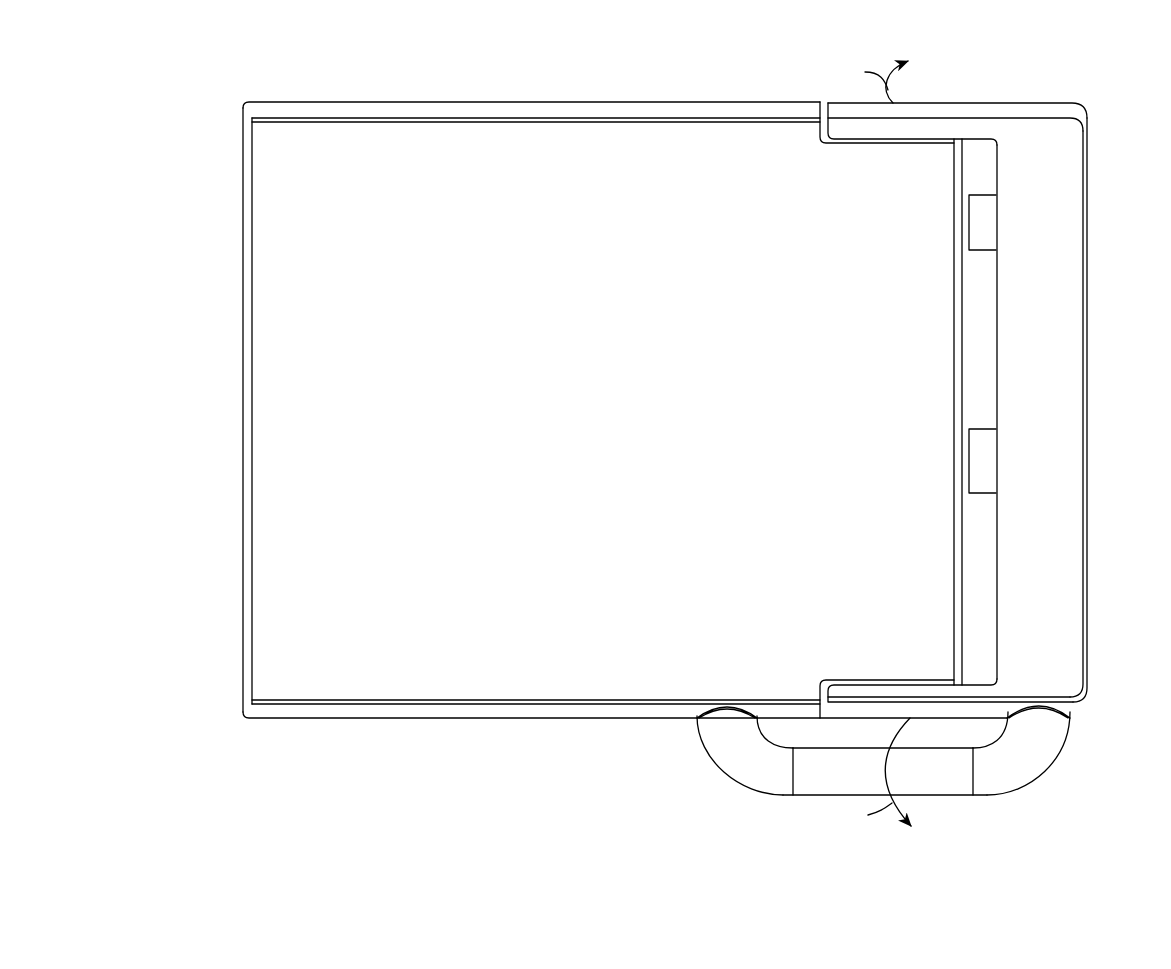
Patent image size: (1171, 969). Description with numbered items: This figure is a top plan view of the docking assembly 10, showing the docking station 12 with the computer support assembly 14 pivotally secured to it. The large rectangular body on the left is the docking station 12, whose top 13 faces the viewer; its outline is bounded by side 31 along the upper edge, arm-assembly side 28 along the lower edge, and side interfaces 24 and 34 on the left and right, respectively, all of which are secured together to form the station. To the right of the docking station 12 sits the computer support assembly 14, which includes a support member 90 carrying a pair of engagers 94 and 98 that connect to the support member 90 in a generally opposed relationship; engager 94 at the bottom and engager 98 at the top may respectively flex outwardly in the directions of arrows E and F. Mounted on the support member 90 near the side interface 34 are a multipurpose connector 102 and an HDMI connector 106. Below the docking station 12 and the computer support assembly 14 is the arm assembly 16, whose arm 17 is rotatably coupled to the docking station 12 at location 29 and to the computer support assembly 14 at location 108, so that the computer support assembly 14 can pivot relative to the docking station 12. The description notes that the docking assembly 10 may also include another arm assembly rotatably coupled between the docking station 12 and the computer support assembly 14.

The docking assembly 10 is at (224, 86).
The docking station 12 is at (351, 98).
The top 13 is at (272, 578).
The computer support assembly 14 is at (1096, 205).
The arm assembly 16 is at (819, 803).
The arm 17 is at (943, 797).
The side interface 24 is at (236, 515).
The arm-assembly side 28 is at (298, 722).
The location 29 is at (708, 713).
The side 31 is at (467, 100).
The side interface 34 is at (977, 352).
The support member 90 is at (1070, 508).
The engager 94 is at (956, 708).
The engager 98 is at (995, 112).
The multipurpose connector 102 is at (985, 457).
The HDMI connector 106 is at (985, 215).
The location 108 is at (1060, 705).